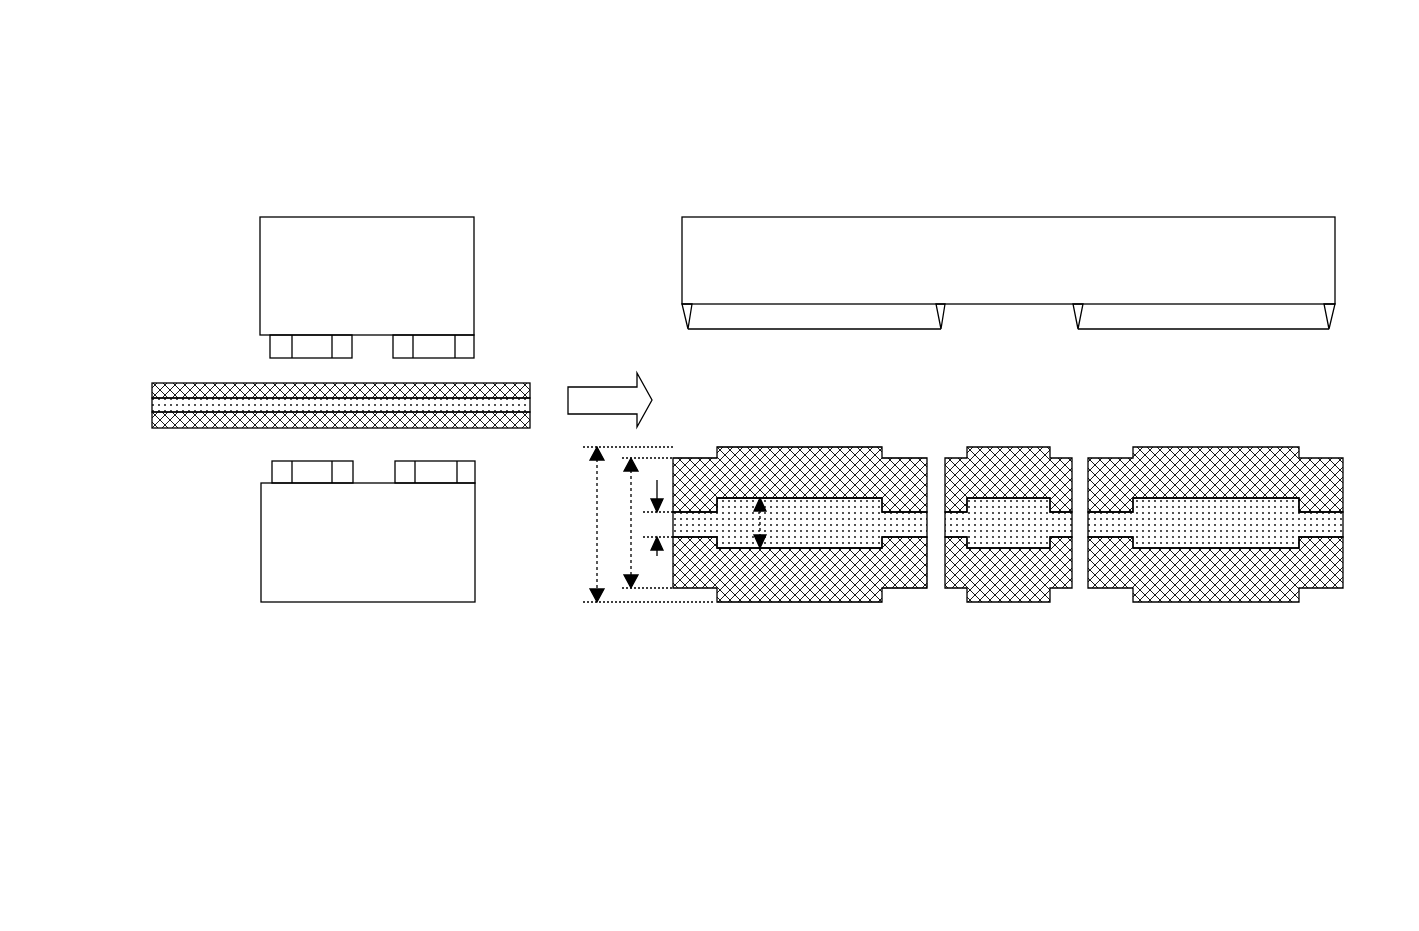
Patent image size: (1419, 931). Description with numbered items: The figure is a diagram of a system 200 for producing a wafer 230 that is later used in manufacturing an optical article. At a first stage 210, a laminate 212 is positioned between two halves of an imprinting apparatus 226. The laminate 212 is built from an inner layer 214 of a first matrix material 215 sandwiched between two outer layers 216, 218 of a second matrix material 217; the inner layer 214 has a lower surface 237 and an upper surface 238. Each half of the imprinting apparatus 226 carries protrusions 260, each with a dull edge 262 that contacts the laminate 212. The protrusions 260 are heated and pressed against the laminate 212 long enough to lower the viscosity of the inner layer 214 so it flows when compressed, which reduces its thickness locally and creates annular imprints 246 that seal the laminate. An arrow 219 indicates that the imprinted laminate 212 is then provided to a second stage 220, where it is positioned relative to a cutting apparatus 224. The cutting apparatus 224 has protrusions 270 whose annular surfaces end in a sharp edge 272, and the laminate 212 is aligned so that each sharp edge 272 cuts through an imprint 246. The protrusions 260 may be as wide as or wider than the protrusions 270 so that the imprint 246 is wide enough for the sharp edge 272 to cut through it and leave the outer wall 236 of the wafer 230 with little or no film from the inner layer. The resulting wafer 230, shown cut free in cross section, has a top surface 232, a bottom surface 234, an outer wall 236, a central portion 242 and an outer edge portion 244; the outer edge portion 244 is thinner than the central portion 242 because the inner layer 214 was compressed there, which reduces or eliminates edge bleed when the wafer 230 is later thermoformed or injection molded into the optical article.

The system 200 is at (253, 113).
The first stage 210 is at (183, 207).
The laminate 212 is at (177, 330).
The inner layer 214 is at (153, 405).
The first matrix material 215 is at (412, 405).
The outer layer 216 is at (178, 428).
The second matrix material 217 is at (277, 392).
The outer layer 218 is at (175, 385).
The arrow 219 is at (614, 386).
The second stage 220 is at (657, 205).
The cutting apparatus 224 is at (1032, 273).
The imprinting apparatus 226 is at (388, 277).
The wafer 230 is at (710, 370).
The top surface 232 is at (752, 447).
The bottom surface 234 is at (752, 602).
The outer wall 236 is at (933, 588).
The lower surface 237 is at (767, 549).
The upper surface 238 is at (770, 496).
The central portion 242 is at (785, 422).
The outer edge portion 244 is at (912, 597).
The imprint 246 is at (906, 452).
The protrusion 260 is at (478, 336).
The dull edge 262 is at (470, 458).
The protrusion 270 is at (1100, 335).
The sharp edge 272 is at (1078, 330).